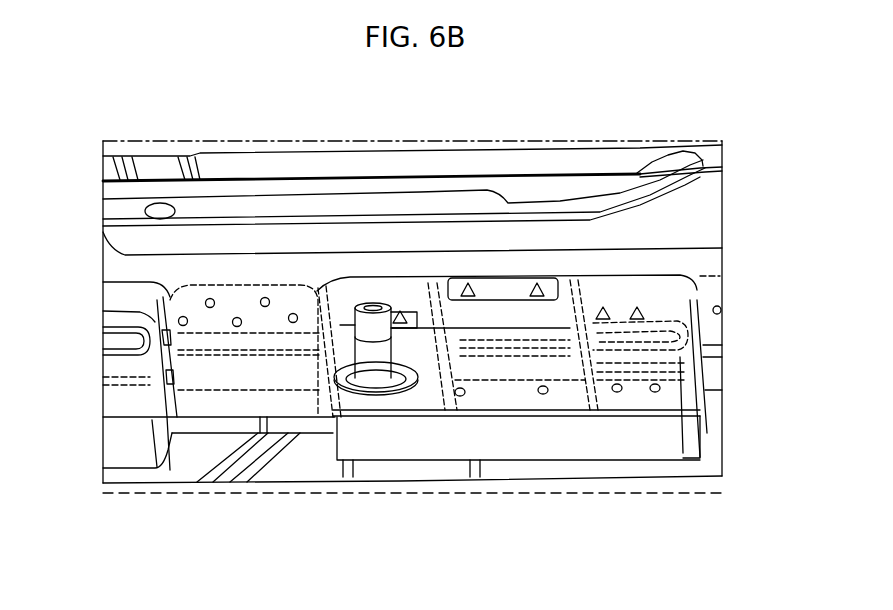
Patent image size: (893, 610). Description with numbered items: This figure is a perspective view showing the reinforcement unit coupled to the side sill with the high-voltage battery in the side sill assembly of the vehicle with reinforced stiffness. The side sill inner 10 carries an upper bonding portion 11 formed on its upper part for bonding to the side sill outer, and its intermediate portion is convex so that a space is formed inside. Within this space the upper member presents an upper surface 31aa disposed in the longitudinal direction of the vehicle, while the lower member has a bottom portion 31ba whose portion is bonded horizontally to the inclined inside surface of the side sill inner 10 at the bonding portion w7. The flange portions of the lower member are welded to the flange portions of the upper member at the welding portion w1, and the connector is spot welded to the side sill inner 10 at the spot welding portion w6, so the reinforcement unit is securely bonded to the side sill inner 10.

The side sill inner 10 is at (675, 257).
The upper bonding portion 11 is at (310, 470).
The upper surface 31aa is at (510, 317).
The bottom portion 31ba is at (583, 443).
The welding portion w1 is at (540, 293).
The spot welding portion w6 is at (265, 298).
The bonding portion w7 is at (522, 460).